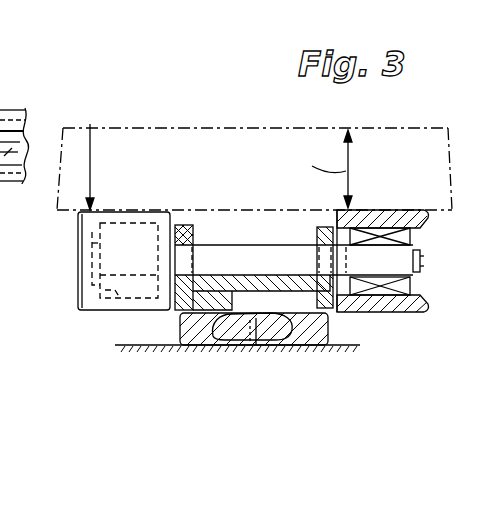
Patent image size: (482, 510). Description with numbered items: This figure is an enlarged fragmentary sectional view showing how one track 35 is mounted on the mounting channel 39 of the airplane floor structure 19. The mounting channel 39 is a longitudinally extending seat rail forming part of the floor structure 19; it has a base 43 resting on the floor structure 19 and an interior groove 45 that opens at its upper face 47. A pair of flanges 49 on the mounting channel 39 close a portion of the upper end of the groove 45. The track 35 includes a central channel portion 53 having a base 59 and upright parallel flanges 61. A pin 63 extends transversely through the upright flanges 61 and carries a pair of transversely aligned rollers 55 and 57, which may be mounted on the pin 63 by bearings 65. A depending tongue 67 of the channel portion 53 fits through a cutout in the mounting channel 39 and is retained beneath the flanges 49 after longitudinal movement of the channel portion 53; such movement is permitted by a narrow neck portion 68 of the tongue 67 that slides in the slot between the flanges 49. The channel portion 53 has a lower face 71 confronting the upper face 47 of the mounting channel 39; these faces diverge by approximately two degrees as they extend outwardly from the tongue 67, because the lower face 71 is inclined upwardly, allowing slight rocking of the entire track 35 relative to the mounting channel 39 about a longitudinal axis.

The floor structure 19 is at (126, 343).
The track 35 is at (76, 233).
The mounting channel 39 is at (336, 344).
The base 43 is at (194, 346).
The interior groove 45 is at (226, 344).
The upper face 47 is at (318, 306).
The flanges 49 is at (24, 166).
The channel portion 53 is at (328, 212).
The roller 55 is at (403, 310).
The roller 57 is at (90, 271).
The base 59 is at (208, 300).
The upright flanges 61 is at (188, 243).
The pin 63 is at (262, 238).
The bearings 65 is at (90, 288).
The tongue 67 is at (266, 328).
The neck portion 68 is at (258, 330).
The lower face 71 is at (176, 313).